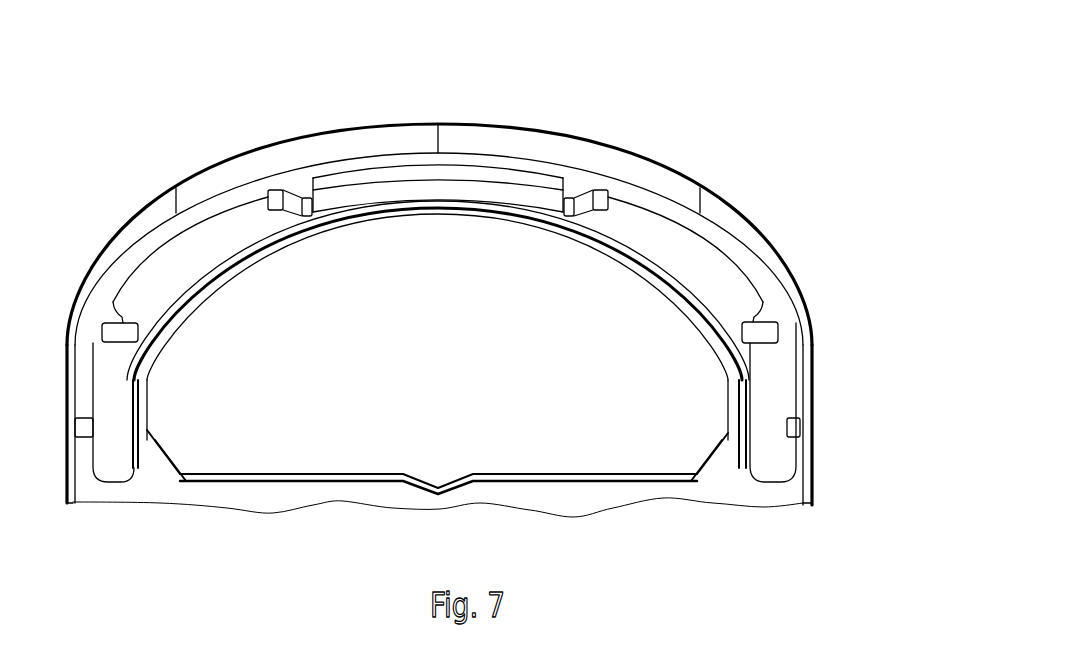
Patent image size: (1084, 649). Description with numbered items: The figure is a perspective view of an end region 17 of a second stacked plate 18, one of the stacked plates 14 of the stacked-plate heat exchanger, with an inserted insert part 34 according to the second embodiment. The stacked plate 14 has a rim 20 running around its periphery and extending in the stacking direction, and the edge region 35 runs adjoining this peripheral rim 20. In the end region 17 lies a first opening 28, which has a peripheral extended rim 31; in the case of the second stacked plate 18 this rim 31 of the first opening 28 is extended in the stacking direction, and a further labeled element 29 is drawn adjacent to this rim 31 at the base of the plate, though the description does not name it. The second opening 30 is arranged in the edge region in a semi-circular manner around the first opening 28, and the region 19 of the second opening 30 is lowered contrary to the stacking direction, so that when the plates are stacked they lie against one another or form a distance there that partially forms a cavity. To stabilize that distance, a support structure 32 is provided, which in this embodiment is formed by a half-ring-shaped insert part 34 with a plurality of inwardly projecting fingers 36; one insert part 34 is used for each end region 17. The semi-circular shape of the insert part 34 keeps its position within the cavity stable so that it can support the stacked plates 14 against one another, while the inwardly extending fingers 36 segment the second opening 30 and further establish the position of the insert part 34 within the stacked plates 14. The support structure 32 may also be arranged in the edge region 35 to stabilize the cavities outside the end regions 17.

The stacked plate 14 is at (489, 258).
The end region 17 is at (800, 228).
The second stacked plate 18 is at (483, 268).
The region of the at least one second opening 19 is at (439, 268).
The rim 20 is at (402, 128).
The first opening 28 is at (456, 370).
The base wall 29 is at (311, 473).
The second opening 30 is at (767, 393).
The rim of the first opening 31 is at (360, 473).
The support structure 32 is at (516, 143).
The insert part 34 is at (644, 188).
The edge region 35 is at (536, 126).
The finger 36 is at (311, 216).